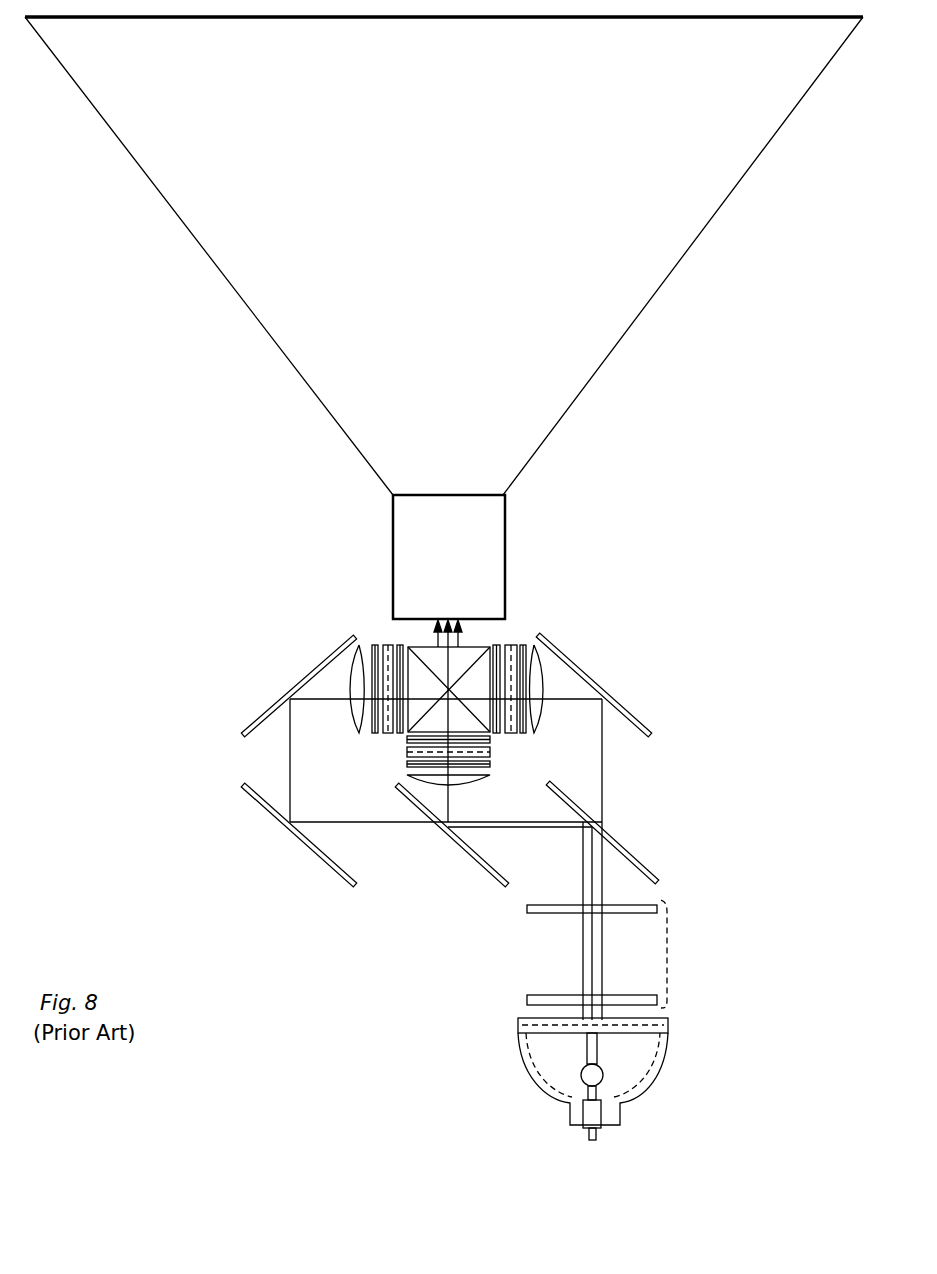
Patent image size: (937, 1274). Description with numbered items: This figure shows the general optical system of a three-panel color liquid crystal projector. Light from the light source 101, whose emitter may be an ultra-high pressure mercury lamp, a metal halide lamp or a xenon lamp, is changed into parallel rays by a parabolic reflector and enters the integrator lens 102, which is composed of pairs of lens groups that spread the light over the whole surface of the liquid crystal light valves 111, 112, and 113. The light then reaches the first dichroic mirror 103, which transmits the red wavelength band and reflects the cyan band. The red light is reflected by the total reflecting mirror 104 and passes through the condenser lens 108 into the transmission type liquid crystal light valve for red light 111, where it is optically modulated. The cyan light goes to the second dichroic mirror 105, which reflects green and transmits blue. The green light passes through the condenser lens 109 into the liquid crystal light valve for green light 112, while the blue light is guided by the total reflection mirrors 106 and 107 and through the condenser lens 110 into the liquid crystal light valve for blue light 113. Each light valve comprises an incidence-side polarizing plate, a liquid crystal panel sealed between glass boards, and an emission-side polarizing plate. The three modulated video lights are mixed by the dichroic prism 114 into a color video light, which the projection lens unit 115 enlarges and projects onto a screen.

The light source 101 is at (640, 1065).
The integrator lens 102 is at (667, 952).
The first dichroic mirror 103 is at (640, 860).
The total reflecting mirror 104 is at (640, 715).
The second dichroic mirror 105 is at (482, 870).
The total reflection mirror 106 is at (325, 863).
The total reflection mirror 107 is at (290, 698).
The condenser lens 108 is at (540, 668).
The condenser lens 109 is at (423, 786).
The condenser lens 110 is at (358, 666).
The transmission type liquid crystal light valve for red light 111 is at (512, 647).
The transmission type liquid crystal light valve for green light 112 is at (490, 752).
The transmission type liquid crystal light valve for blue light 113 is at (388, 735).
The dichroic prism 114 is at (477, 647).
The projection lens unit 115 is at (495, 537).